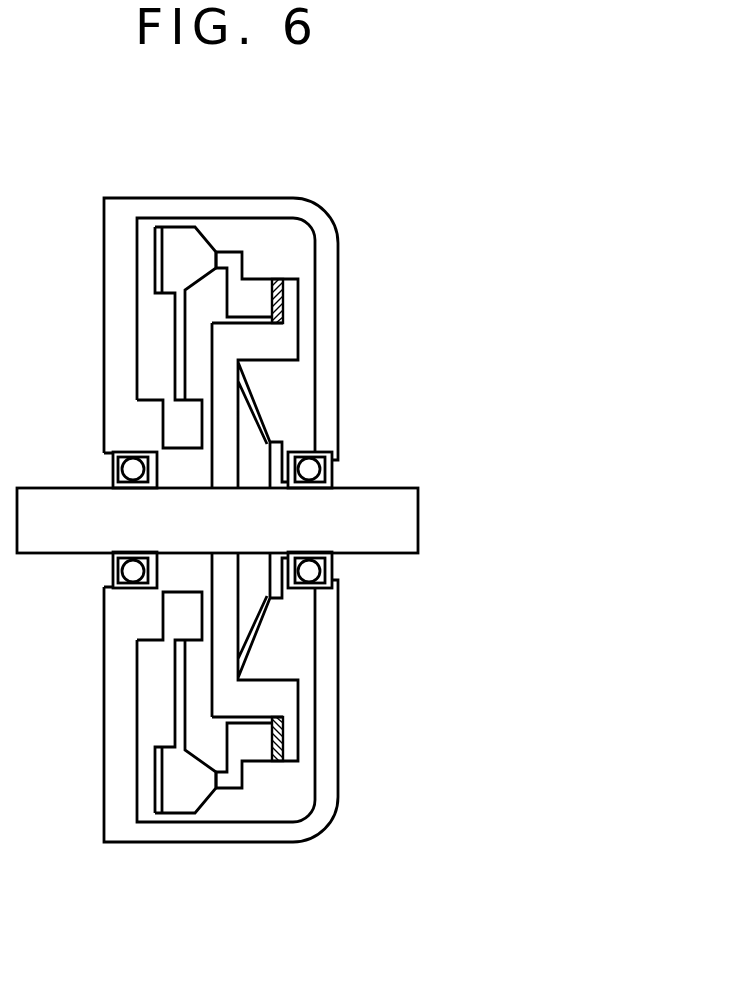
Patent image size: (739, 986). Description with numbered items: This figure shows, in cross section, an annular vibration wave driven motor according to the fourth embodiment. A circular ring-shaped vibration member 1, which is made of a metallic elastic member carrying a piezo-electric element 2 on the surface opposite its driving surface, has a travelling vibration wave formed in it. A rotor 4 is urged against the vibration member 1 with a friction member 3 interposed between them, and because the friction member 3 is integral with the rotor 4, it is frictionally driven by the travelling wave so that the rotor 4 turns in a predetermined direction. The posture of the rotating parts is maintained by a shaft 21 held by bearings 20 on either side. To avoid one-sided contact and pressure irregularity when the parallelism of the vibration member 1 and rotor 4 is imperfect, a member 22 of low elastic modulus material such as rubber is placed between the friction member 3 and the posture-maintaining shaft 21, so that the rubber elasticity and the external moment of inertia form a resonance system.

The vibration member 1 is at (168, 230).
The piezo-electric element 2 is at (157, 257).
The friction member 3 is at (216, 250).
The rotor 4 is at (253, 278).
The bearings 20 is at (113, 462).
The shaft 21 is at (414, 488).
The rubber member 22 is at (277, 280).